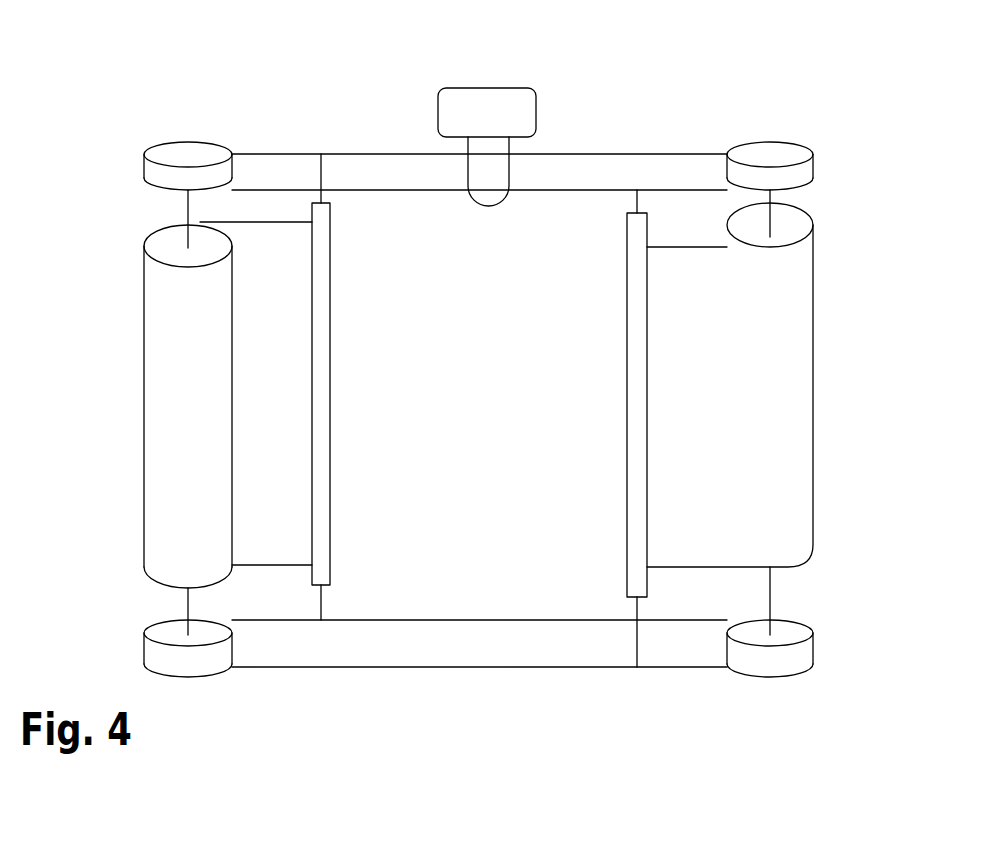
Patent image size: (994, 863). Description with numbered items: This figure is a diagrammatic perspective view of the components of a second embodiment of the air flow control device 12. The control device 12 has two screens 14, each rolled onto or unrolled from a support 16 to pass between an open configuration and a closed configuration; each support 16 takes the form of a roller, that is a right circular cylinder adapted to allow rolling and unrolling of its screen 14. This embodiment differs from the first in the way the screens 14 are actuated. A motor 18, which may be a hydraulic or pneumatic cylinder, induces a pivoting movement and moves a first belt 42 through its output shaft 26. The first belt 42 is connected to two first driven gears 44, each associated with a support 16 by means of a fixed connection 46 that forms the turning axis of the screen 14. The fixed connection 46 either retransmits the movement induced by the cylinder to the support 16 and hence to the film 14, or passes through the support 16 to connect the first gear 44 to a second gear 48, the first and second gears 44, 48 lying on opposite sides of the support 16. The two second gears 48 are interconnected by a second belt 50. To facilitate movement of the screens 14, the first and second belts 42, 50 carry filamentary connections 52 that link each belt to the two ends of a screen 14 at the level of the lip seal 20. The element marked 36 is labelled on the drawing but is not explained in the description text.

The control device 12 is at (80, 270).
The screen 14 is at (270, 477).
The support 16 is at (198, 390).
The motor 18 is at (478, 118).
The lip seal 20 is at (317, 301).
The output shaft 26 is at (478, 178).
The support 36 is at (307, 0).
The first belt 42 is at (678, 154).
The first driven gear 44 is at (778, 158).
The connection 46 is at (776, 196).
The second gear 48 is at (798, 653).
The second belt 50 is at (438, 633).
The filamentary connection 52 is at (315, 177).